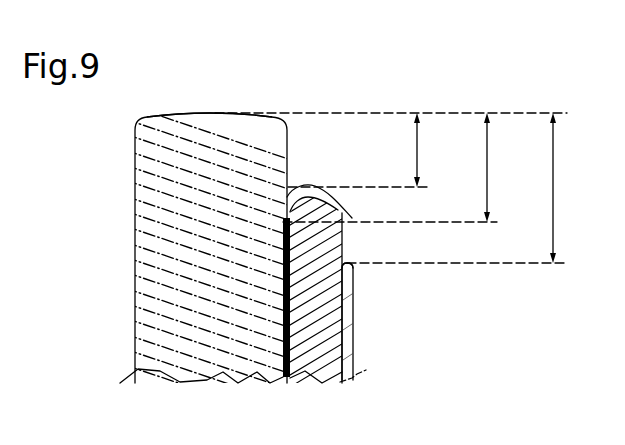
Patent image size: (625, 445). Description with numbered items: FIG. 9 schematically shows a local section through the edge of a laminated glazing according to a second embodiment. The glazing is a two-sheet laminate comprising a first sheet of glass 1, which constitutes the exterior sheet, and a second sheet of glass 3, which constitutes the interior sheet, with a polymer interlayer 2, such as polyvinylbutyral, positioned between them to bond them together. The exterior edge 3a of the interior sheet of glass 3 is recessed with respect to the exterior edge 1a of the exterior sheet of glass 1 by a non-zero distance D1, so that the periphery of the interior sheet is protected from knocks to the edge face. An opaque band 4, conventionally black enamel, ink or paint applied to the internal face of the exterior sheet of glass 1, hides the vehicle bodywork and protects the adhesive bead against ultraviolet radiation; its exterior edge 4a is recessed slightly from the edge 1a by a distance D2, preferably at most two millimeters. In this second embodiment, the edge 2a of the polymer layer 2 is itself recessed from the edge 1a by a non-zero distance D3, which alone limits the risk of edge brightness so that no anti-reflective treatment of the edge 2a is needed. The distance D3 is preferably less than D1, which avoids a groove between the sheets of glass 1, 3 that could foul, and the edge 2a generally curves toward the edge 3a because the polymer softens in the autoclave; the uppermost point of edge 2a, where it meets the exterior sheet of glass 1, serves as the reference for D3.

The first sheet of glass 1 is at (165, 254).
The exterior edge of the exterior sheet of glass 1a is at (197, 104).
The polymer interlayer 2 is at (335, 333).
The edge of the polymer layer 2a is at (327, 178).
The second sheet of glass 3 is at (345, 298).
The exterior edge of the interior sheet of glass 3a is at (348, 254).
The opaque band 4 is at (278, 336).
The exterior edge of the band 4a is at (352, 218).
The recessing distance of the interior sheet edge D1 is at (574, 188).
The recessing distance of the opaque band D2 is at (506, 167).
The recessing distance of the polymer layer edge D3 is at (438, 150).